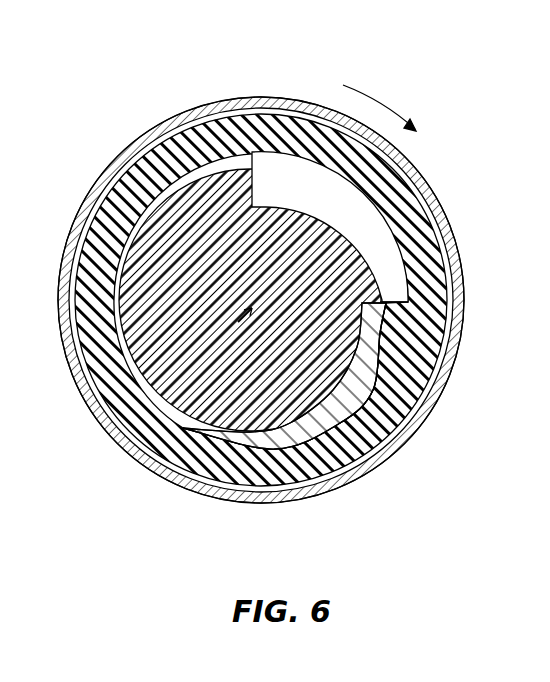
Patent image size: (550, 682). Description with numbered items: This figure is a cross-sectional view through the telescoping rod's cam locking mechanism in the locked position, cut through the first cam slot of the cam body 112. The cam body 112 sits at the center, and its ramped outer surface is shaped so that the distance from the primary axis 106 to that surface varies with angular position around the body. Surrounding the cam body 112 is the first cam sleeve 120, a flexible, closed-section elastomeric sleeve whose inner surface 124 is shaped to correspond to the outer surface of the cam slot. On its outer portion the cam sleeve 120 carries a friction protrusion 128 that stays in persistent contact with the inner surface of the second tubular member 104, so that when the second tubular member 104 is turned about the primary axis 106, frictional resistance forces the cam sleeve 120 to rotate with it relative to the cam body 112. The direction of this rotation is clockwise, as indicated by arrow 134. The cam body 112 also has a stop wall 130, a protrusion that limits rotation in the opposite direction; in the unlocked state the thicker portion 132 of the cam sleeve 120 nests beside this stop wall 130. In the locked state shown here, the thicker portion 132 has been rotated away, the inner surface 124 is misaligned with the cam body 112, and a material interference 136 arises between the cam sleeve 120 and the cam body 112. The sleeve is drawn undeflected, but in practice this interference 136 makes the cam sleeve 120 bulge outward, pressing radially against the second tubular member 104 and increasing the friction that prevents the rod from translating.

The second tubular member 104 is at (372, 468).
The primary axis 106 is at (246, 327).
The cam body 112 is at (160, 243).
The first cam sleeve 120 is at (257, 125).
The first inner surface 124 is at (340, 368).
The friction protrusion 128 is at (69, 298).
The stop wall 130 is at (243, 172).
The thicker portion 132 is at (400, 320).
The arrow 134 is at (396, 86).
The material interference 136 is at (352, 393).